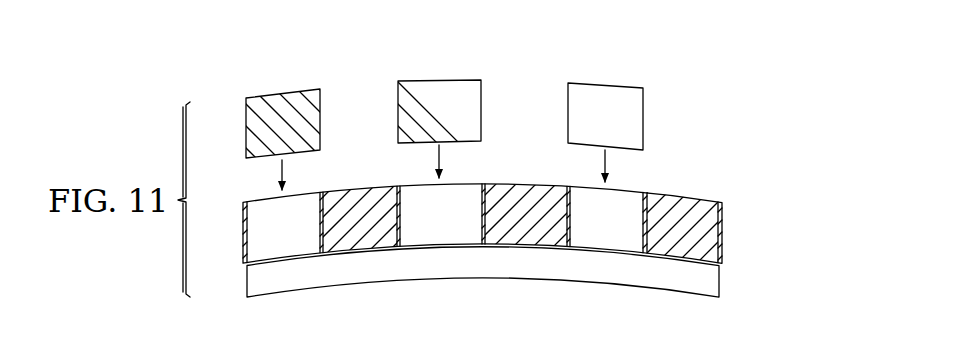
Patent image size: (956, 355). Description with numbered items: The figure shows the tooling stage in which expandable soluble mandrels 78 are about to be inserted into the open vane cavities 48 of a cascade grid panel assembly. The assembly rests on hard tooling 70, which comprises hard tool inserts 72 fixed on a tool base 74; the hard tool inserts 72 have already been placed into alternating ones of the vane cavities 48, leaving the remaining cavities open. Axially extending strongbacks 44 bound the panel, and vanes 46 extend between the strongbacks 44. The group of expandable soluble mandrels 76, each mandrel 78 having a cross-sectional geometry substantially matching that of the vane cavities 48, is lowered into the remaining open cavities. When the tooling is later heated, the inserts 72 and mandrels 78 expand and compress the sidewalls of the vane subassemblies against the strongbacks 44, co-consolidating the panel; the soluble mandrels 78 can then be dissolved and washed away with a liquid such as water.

The hard tooling 70 is at (767, 277).
The hard tool inserts 72 is at (353, 190).
The tool base 74 is at (650, 292).
The set of magnets 76 is at (682, 101).
The expandable soluble mandrels 78 is at (272, 100).
The strongbacks 44 is at (243, 247).
The vanes 46 is at (286, 246).
The vane cavities 48 is at (625, 208).